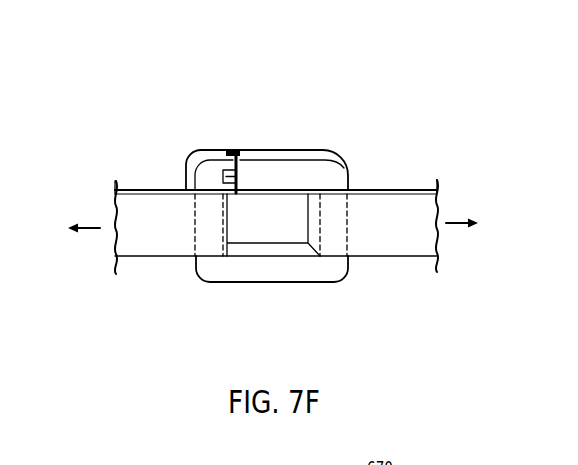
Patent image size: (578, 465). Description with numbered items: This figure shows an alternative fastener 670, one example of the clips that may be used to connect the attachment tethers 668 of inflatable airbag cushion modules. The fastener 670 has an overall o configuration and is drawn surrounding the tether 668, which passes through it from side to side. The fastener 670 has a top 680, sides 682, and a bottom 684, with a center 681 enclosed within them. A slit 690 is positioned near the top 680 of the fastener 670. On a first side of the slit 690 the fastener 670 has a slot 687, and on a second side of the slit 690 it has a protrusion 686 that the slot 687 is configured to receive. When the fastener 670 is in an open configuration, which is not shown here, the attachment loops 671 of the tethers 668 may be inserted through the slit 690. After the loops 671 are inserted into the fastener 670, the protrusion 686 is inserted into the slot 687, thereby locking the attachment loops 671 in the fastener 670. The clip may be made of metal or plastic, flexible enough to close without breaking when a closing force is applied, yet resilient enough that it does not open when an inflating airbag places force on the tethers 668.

The attachment tether 668 is at (135, 203).
The fastener 670 is at (355, 139).
The attachment loop 671 is at (155, 189).
The top 680 is at (270, 150).
The center 681 is at (297, 166).
The sides 682 is at (187, 258).
The bottom 684 is at (285, 280).
The protrusion 686 is at (237, 176).
The slot 687 is at (222, 174).
The slit 690 is at (232, 150).